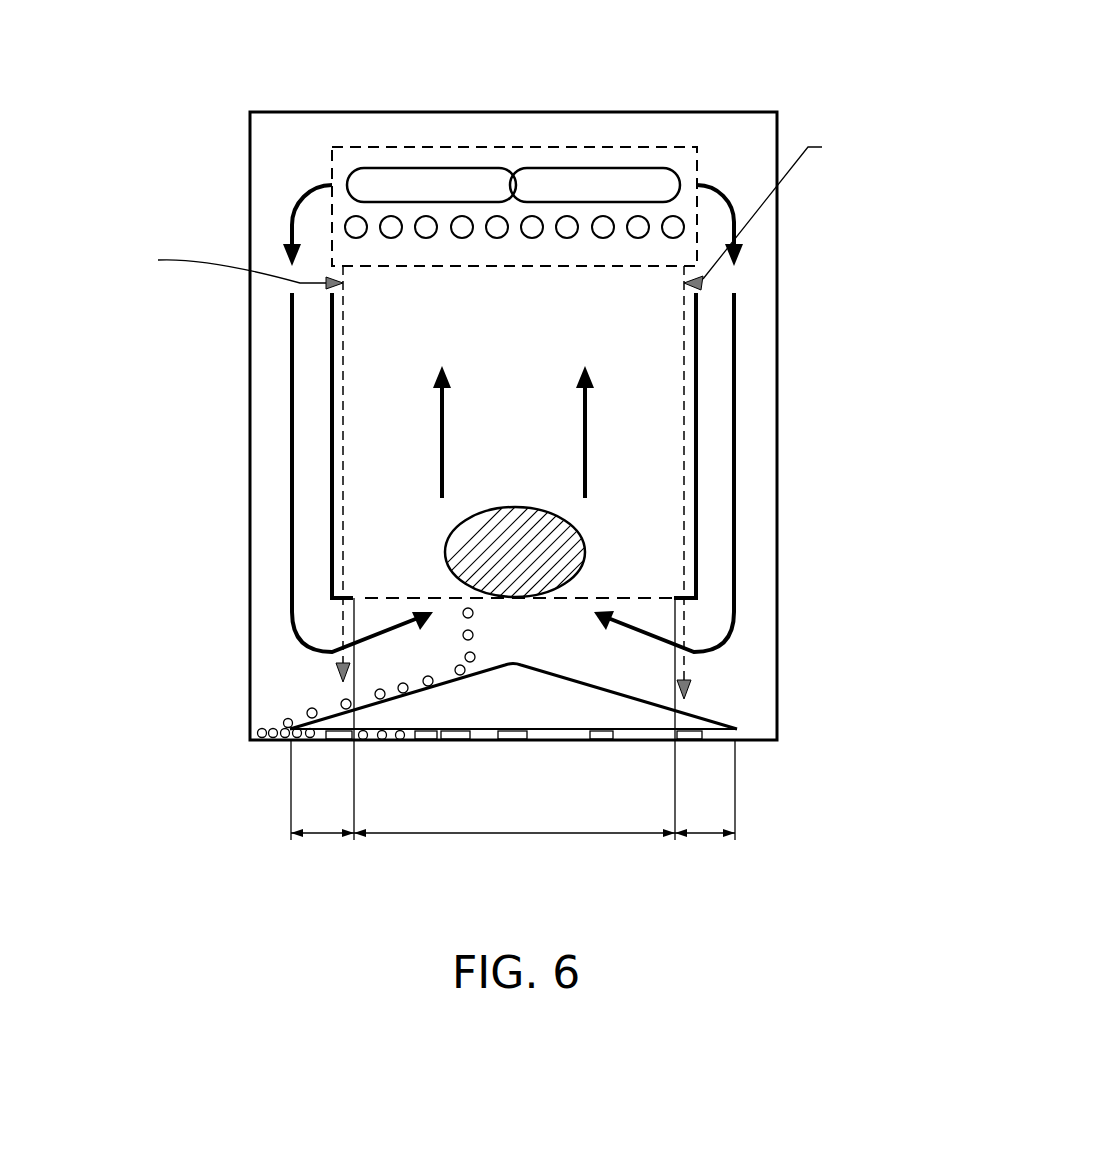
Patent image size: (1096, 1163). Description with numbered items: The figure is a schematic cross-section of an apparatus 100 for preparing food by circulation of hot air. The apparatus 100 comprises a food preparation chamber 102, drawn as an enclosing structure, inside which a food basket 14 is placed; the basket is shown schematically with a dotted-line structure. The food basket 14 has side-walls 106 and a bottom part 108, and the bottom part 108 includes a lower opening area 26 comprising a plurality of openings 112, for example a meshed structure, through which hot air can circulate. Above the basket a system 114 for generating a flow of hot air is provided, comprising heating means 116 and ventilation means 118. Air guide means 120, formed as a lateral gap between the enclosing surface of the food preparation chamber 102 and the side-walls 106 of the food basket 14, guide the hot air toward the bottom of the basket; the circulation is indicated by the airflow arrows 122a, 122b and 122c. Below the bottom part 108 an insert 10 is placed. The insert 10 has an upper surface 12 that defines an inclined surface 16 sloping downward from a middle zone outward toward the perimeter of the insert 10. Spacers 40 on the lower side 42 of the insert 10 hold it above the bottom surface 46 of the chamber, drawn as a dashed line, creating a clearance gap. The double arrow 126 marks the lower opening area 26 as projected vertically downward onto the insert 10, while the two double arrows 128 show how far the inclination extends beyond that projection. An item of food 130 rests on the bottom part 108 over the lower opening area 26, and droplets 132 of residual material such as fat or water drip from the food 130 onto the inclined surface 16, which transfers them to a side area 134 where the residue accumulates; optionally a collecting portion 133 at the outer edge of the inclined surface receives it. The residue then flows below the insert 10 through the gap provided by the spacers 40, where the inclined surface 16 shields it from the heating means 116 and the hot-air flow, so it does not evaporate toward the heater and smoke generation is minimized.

The apparatus 100 is at (797, 57).
The food preparation chamber 102 is at (778, 383).
The side-walls 106 is at (697, 472).
The bottom part 108 is at (603, 591).
The insert 10 is at (690, 705).
The upper surface 12 is at (447, 677).
The food basket 14 is at (703, 332).
The inclined surface 16 is at (366, 704).
The lower opening area 26 is at (397, 596).
The spacers 40 is at (427, 744).
The lower side 42 is at (461, 744).
The bottom surface 46 is at (495, 745).
The openings 112 is at (445, 596).
The system for generating a flow of hot air 114 is at (523, 142).
The heating means 116 is at (638, 240).
The ventilation means 118 is at (430, 168).
The air guide means 120 is at (260, 342).
The airflow arrow 122a is at (292, 221).
The airflow arrow 122b is at (292, 609).
The airflow arrow 122c is at (442, 442).
The double arrow 126 is at (513, 836).
The double arrows 128 is at (330, 836).
The item of food 130 is at (510, 506).
The droplets 132 is at (478, 635).
The collecting portion 133 is at (720, 724).
The side area 134 is at (258, 735).